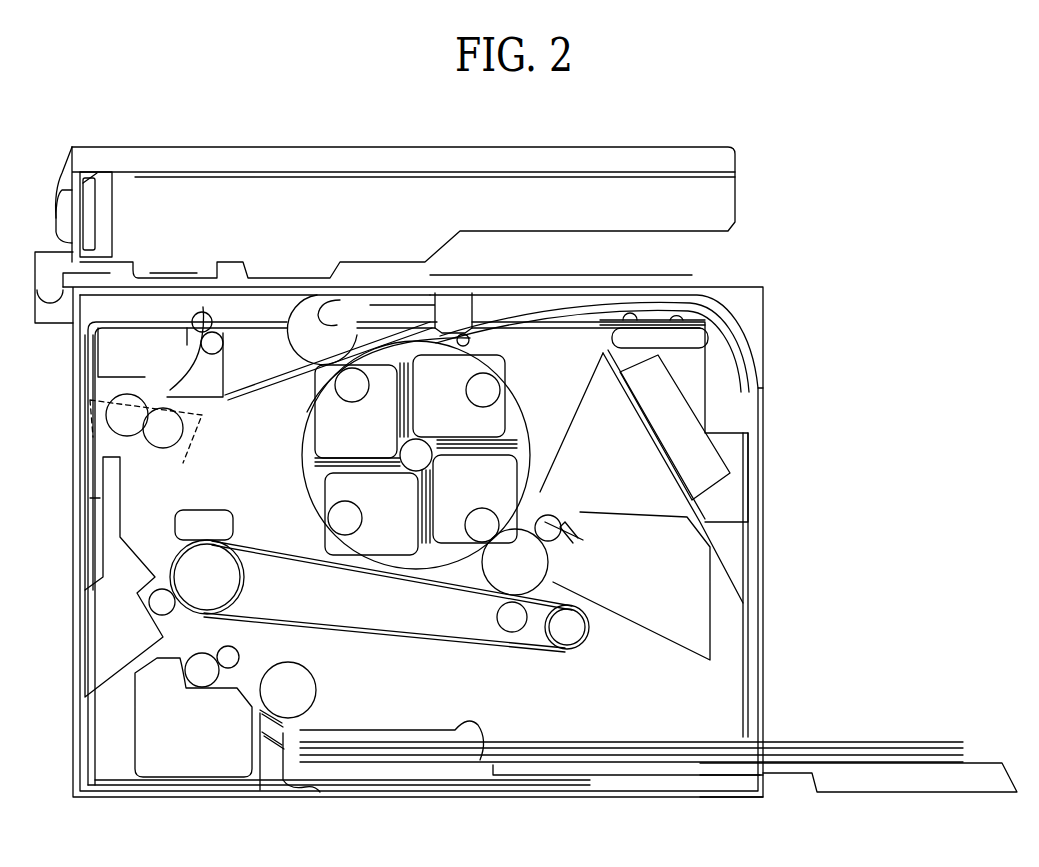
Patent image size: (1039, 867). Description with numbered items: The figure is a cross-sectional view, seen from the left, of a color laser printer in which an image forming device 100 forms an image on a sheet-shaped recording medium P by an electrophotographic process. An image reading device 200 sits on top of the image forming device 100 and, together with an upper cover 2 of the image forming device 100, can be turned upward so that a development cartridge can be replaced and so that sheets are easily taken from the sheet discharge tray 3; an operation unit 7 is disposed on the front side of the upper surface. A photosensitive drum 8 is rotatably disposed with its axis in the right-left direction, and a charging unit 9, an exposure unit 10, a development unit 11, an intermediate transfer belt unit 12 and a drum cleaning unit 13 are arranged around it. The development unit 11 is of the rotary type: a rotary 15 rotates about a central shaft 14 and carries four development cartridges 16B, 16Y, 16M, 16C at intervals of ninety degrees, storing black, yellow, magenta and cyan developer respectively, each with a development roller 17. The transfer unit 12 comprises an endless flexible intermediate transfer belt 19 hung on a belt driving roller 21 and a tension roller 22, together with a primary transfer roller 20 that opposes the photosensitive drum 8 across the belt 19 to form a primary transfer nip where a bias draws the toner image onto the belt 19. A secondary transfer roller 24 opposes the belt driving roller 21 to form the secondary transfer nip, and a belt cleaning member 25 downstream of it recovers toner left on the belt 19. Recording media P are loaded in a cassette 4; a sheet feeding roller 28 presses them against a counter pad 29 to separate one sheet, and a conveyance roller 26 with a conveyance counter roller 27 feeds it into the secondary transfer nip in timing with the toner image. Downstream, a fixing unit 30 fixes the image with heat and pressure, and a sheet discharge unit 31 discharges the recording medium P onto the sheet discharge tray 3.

The image reading device 200 is at (208, 150).
The upper cover 2 is at (760, 307).
The sheet discharge tray 3 is at (420, 315).
The operation unit 7 is at (683, 280).
The sheet discharge unit 31 is at (230, 352).
The fixing unit 30 is at (190, 443).
The development unit 11 is at (305, 490).
The rotary 15 is at (307, 463).
The central shaft 14 is at (420, 448).
The development cartridge 16Y is at (477, 380).
The development cartridge 16M is at (308, 432).
The development cartridge 16C is at (332, 507).
The development cartridge 16B is at (523, 447).
The development roller 17 is at (480, 517).
The exposure unit 10 is at (690, 427).
The charging unit 9 is at (557, 522).
The drum cleaning unit 13 is at (560, 560).
The photosensitive drum 8 is at (502, 572).
The intermediate transfer belt 19 is at (543, 645).
The belt driving roller 21 is at (225, 577).
The tension roller 22 is at (573, 630).
The primary transfer roller 20 is at (508, 620).
The intermediate transfer belt unit 12 is at (390, 623).
The secondary transfer roller 24 is at (150, 608).
The belt cleaning member 25 is at (182, 522).
The conveyance roller 26 is at (192, 682).
The conveyance counter roller 27 is at (235, 650).
The sheet feeding roller 28 is at (313, 682).
The counter pad 29 is at (268, 755).
The recording medium P is at (876, 742).
The cassette 4 is at (983, 763).
The image forming device 100 is at (810, 548).